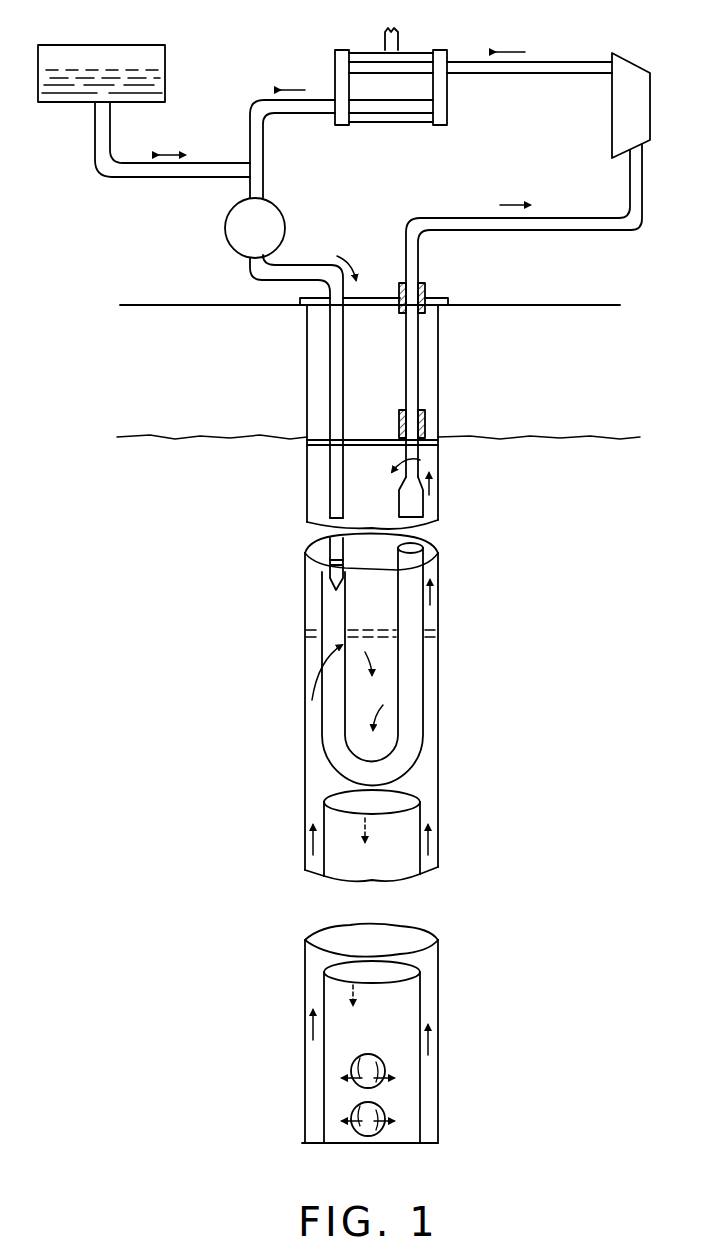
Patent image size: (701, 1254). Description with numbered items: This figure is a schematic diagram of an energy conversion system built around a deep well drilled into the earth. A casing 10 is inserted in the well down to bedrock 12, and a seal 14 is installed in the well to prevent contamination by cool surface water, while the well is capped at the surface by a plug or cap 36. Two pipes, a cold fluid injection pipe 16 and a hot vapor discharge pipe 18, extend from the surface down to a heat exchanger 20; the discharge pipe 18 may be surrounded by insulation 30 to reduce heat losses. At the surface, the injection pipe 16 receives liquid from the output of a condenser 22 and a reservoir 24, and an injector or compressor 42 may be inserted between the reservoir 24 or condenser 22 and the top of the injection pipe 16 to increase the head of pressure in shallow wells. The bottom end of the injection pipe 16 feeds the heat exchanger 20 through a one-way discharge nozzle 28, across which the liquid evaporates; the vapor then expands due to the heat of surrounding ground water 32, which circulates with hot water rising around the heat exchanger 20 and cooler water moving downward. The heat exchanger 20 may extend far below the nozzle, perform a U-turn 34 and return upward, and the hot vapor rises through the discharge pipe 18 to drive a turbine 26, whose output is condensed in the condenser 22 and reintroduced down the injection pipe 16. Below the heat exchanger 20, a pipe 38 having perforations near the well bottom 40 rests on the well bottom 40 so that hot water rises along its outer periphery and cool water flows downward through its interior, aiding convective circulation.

The casing 10 is at (438, 347).
The bedrock 12 is at (494, 440).
The seal 14 is at (430, 447).
The cold fluid injection pipe 16 is at (328, 363).
The hot vapor discharge pipe 18 is at (418, 374).
The heat exchanger 20 is at (423, 688).
The condenser 22 is at (366, 50).
The reservoir 24 is at (108, 45).
The turbine 26 is at (640, 66).
The one-way discharge nozzle 28 is at (330, 580).
The insulation 30 is at (425, 296).
The ground water 32 is at (392, 628).
The U-turn 34 is at (360, 780).
The cap 36 is at (300, 299).
The pipe 38 is at (348, 872).
The well bottom 40 is at (372, 1145).
The compressor 42 is at (228, 226).